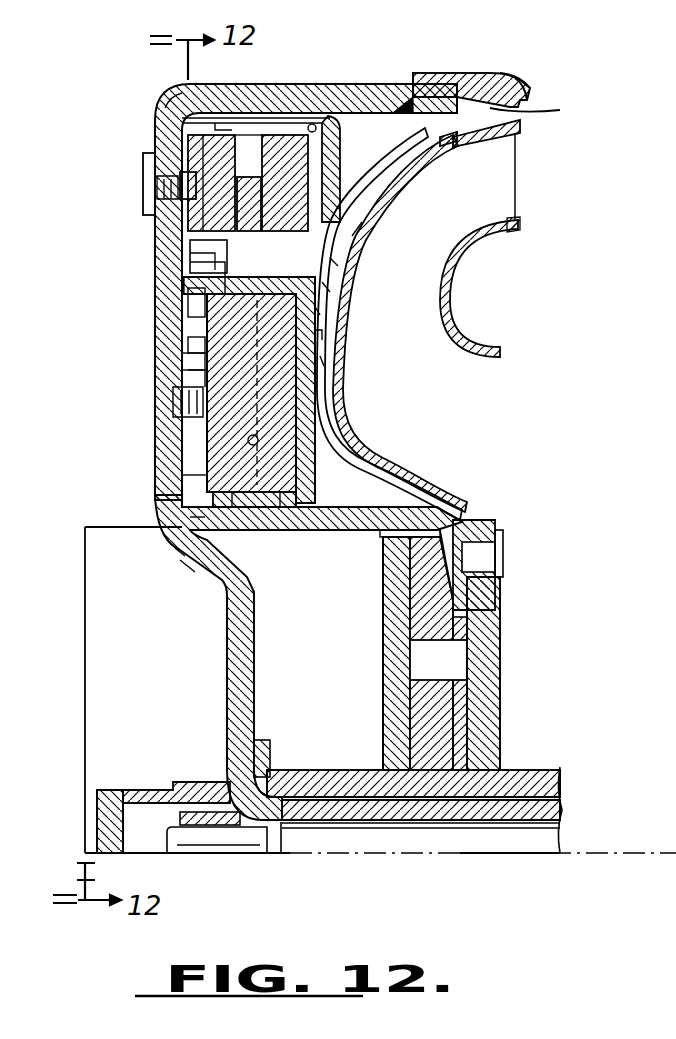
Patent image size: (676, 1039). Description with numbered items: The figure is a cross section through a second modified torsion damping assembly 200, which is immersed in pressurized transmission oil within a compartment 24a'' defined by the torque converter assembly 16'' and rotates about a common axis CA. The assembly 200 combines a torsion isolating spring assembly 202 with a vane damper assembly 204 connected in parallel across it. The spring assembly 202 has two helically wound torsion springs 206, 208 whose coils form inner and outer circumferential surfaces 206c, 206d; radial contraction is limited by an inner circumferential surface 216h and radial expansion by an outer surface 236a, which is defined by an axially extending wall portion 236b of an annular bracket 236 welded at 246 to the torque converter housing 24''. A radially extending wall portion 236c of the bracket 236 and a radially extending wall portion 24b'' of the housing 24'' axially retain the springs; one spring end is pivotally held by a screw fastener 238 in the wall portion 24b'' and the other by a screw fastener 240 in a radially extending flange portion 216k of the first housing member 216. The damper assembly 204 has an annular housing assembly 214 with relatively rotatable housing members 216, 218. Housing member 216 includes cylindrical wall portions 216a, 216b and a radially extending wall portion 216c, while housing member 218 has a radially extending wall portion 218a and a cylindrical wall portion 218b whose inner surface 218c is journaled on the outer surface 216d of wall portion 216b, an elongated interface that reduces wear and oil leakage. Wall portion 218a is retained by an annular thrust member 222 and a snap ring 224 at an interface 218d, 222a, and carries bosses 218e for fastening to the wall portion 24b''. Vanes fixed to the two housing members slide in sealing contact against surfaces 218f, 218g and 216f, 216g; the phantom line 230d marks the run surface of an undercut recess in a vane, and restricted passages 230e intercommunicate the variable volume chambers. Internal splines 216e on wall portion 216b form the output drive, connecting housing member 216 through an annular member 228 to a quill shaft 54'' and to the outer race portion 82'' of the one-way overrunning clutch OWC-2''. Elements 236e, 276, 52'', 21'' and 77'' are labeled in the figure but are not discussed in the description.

The common axis CA is at (395, 855).
The helically wound torsion spring 206 is at (157, 128).
The inner circumferential surface 206c is at (188, 247).
The outer circumferential surface 206d is at (165, 108).
The radially outer circumferential surface 236a is at (185, 116).
The axially extending wall portion 236b is at (222, 128).
The radially extending wall portion 236c is at (335, 165).
The leaf spring portion 236e is at (345, 112).
The annular bracket 236 is at (378, 186).
The helically wound torsion spring 208 is at (252, 135).
The torsion isolating spring assembly 202 is at (313, 124).
The weld 246 is at (378, 122).
The torsion damping assembly 200 is at (400, 78).
The torque converter housing 24'' is at (500, 54).
The torque converter assembly 16'' is at (552, 64).
The compartment 24a'' is at (526, 164).
The sealing surface 216g is at (335, 439).
The vane damper assembly 204 is at (333, 410).
The screw fastener 240 is at (355, 233).
The radially extending flange portion 216k is at (340, 261).
The radially inner circumferential surface 216h is at (328, 286).
The sealing surface 216f is at (318, 309).
The phantom line 230d is at (318, 333).
The radially extending wall portion 216c is at (326, 360).
The first housing member 216 is at (320, 386).
The axially extending cylindrical wall portion 216a is at (178, 284).
The interface surface 222a is at (190, 266).
The second housing member 218 is at (240, 471).
The restricted passage 230e is at (250, 446).
The snap ring 224 is at (188, 301).
The annular thrust member 222 is at (190, 343).
The interface surface 218d is at (183, 361).
The brush 276 is at (175, 396).
The boss 218e is at (195, 386).
The radially extending wall portion 218a is at (195, 481).
The radially outer surface 216d is at (200, 521).
The internal splines 216e is at (383, 534).
The annular housing assembly 214 is at (192, 518).
The axially extending cylindrical wall portion 216b is at (178, 552).
The radially inner surface 218c is at (186, 562).
The sealing surface 218f is at (236, 494).
The axially extending cylindrical wall portion 218b is at (284, 500).
The sealing surface 218g is at (330, 469).
The outer race portion 82'' is at (492, 544).
The annular member 228 is at (383, 704).
The one-way overrunning clutch OWC-2'' is at (518, 653).
The plate 52'' is at (453, 765).
The quill shaft 54'' is at (466, 796).
The axle 21'' is at (460, 810).
The seal 77'' is at (189, 793).
The screw fastener 238 is at (143, 171).
The radially extending wall portion 24b'' is at (132, 194).